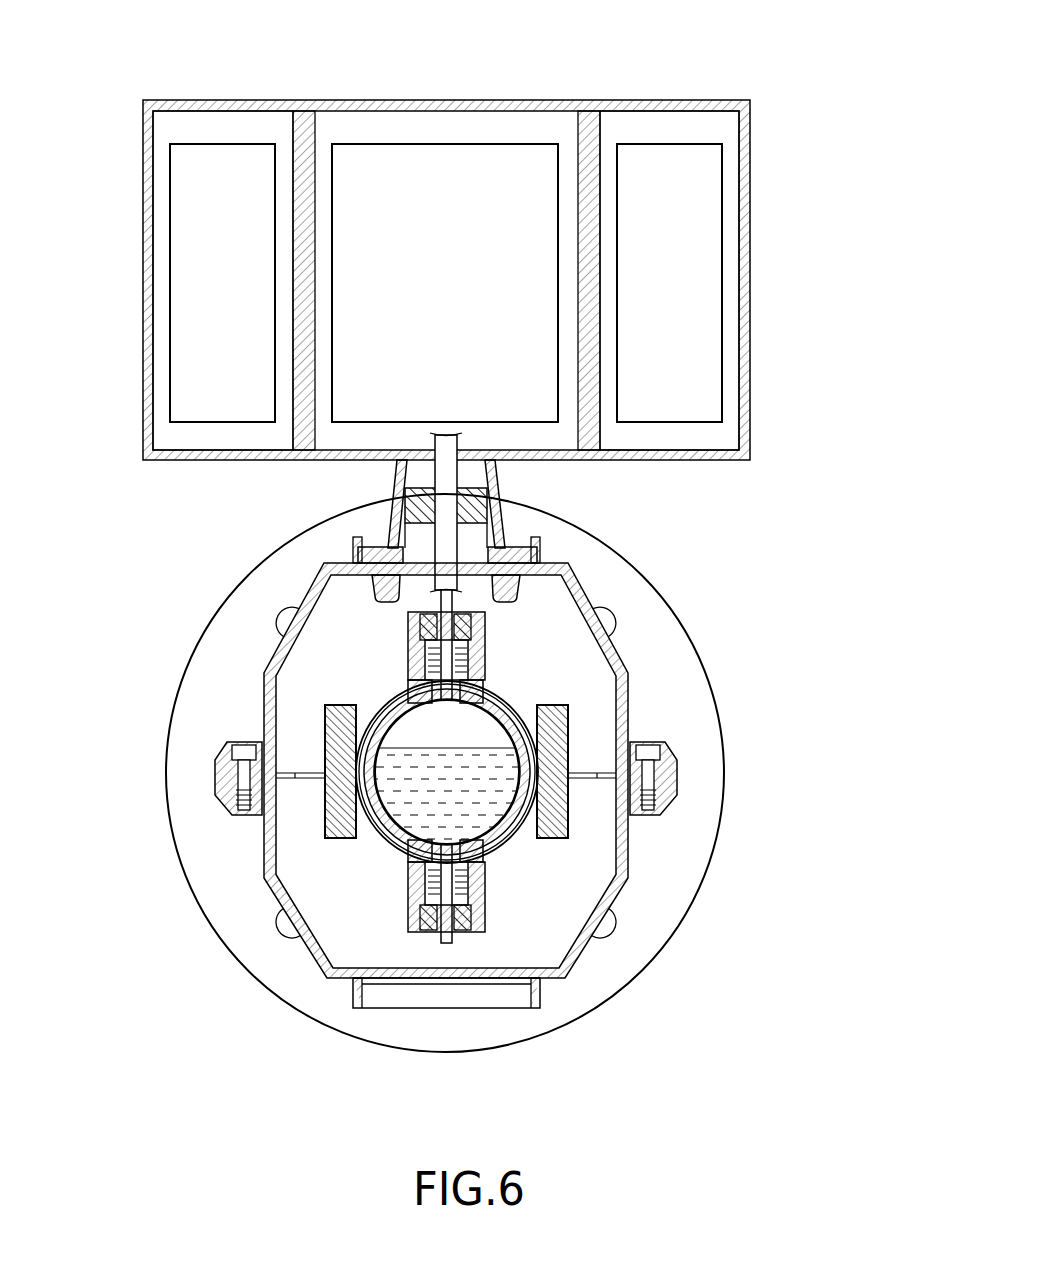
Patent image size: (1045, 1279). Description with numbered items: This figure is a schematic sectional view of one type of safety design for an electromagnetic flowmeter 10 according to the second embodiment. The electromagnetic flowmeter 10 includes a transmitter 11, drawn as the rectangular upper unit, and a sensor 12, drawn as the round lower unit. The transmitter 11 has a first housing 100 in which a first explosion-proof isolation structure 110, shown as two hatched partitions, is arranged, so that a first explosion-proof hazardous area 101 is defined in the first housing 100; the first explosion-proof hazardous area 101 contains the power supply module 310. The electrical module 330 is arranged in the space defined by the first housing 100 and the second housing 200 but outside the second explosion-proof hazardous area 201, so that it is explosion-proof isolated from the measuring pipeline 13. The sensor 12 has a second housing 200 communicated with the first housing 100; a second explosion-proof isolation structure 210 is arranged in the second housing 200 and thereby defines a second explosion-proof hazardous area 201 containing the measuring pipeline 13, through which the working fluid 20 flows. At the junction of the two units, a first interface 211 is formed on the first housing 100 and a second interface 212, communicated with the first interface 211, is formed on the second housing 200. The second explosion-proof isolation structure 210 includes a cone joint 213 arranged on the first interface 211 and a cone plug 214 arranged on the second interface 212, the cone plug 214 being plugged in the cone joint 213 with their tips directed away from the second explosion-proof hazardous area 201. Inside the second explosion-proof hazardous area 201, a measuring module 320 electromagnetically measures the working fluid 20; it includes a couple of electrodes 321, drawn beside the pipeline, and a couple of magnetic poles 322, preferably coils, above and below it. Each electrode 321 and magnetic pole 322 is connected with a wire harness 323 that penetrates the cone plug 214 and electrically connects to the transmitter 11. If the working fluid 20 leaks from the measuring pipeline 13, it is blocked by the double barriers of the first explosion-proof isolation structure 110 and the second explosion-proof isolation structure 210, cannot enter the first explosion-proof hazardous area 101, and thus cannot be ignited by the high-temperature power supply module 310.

The electromagnetic flowmeter 10 is at (758, 29).
The transmitter 11 is at (399, 242).
The sensor 12 is at (120, 566).
The measuring pipeline 13 is at (573, 660).
The working fluid 20 is at (537, 802).
The first housing 100 is at (440, 100).
The first explosion-proof hazardous area 101 is at (210, 128).
The first explosion-proof isolation structure 110 is at (318, 128).
The second housing 200 is at (523, 697).
The second explosion-proof hazardous area 201 is at (598, 633).
The second explosion-proof isolation structure 210 is at (335, 519).
The first interface 211 is at (392, 477).
The second interface 212 is at (365, 550).
The cone joint 213 is at (420, 510).
The cone plug 214 is at (440, 478).
The power supply module 310 is at (233, 279).
The measuring module 320 is at (366, 827).
The electrode 321 is at (322, 821).
The magnetic pole 322 is at (403, 648).
The wire harness 323 is at (452, 470).
The electrical module 330 is at (466, 279).